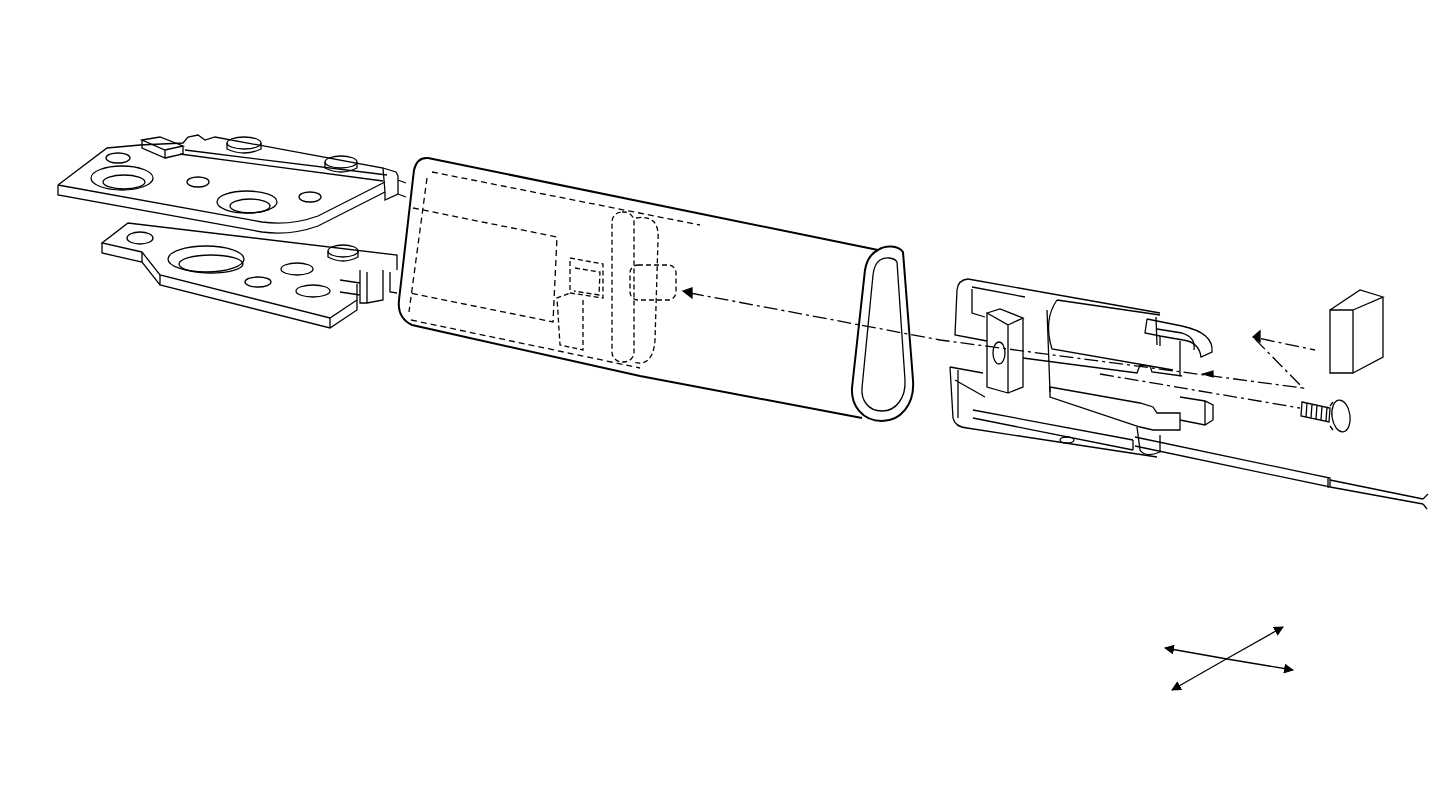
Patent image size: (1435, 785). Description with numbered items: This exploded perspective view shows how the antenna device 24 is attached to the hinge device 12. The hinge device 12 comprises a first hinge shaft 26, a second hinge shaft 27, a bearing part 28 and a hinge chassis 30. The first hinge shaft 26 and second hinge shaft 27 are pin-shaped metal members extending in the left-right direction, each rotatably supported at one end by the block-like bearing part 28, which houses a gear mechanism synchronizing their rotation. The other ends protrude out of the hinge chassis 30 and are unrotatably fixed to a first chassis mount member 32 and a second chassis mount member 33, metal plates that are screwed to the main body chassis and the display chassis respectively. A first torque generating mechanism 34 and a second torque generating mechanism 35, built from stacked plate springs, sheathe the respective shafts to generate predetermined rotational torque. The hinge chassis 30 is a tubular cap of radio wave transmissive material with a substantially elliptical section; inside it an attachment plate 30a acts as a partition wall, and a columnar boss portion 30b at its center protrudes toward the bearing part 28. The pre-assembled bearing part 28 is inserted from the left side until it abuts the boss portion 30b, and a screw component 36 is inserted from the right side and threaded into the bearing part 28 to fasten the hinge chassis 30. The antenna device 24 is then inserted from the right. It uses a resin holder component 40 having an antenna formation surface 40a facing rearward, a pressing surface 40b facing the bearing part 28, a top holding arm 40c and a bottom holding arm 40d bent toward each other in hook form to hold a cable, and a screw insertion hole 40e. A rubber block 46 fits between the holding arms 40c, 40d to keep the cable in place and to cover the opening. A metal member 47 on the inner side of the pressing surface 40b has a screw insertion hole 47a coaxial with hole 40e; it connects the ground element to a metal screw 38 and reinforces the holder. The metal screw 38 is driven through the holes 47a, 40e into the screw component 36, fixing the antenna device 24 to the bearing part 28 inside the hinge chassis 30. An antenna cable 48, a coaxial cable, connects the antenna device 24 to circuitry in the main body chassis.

The hinge device 12 is at (708, 88).
The antenna device 24 is at (1120, 337).
The first hinge shaft 26 is at (390, 306).
The second hinge shaft 27 is at (386, 182).
The bearing part 28 is at (500, 270).
The hinge chassis 30 is at (656, 280).
The attachment plate 30a is at (645, 350).
The boss portion 30b is at (583, 352).
The first chassis mount member 32 is at (232, 297).
The second chassis mount member 33 is at (162, 178).
The first torque generating mechanism 34 is at (470, 302).
The second torque generating mechanism 35 is at (458, 188).
The screw component 36 is at (678, 295).
The metal screw 38 is at (1355, 418).
The holder component 40 is at (1110, 305).
The antenna formation surface 40a is at (1043, 335).
The pressing surface 40b is at (975, 282).
The top holding arm 40c is at (1195, 345).
The bottom holding arm 40d is at (1210, 415).
The screw insertion hole 40e is at (1000, 395).
The rubber block 46 is at (1370, 330).
The metal member 47 is at (1035, 370).
The screw insertion hole 47a is at (1032, 440).
The antenna cable 48 is at (1290, 462).